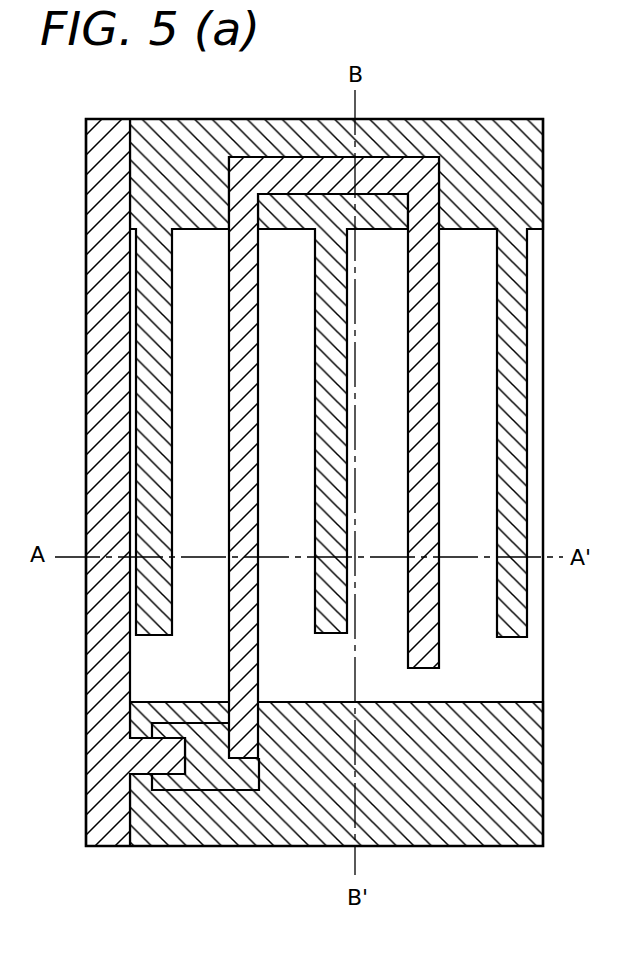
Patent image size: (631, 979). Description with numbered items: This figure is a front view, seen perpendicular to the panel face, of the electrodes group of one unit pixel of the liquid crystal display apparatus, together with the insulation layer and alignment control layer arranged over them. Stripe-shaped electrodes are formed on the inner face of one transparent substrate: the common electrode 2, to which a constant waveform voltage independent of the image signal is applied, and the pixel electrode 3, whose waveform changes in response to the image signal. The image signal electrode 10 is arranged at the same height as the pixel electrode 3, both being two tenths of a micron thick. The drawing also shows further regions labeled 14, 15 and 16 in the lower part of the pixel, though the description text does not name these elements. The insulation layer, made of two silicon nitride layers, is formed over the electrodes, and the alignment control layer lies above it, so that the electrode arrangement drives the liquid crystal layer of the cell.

The common electrode 2 is at (140, 182).
The pixel electrode 3 is at (232, 468).
The image signal electrode 10 is at (105, 312).
The ohmic region 14 is at (533, 718).
The gate pad region 15 is at (262, 855).
The contact portion 16 is at (190, 730).